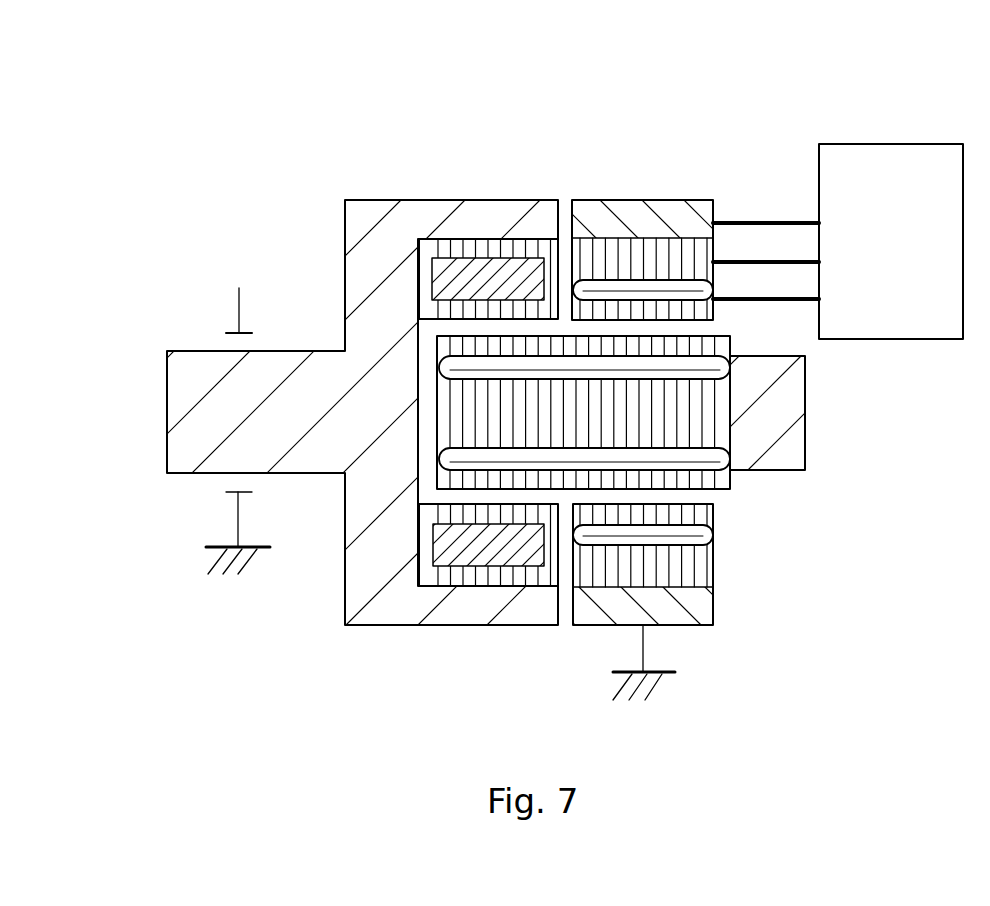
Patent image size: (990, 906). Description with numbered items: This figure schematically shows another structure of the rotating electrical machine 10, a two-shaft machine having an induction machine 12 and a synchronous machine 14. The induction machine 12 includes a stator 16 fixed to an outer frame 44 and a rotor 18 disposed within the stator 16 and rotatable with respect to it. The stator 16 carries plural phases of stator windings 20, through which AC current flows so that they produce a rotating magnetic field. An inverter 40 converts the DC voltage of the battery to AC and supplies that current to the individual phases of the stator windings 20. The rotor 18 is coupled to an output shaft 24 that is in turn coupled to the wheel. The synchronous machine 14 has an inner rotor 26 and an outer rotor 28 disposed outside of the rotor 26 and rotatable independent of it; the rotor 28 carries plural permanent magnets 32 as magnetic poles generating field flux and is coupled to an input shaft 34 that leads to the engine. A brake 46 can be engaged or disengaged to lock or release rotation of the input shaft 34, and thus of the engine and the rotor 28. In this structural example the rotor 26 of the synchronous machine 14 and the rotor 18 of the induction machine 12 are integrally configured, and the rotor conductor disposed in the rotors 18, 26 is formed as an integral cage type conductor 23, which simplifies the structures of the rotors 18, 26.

The rotating electrical machine 10 is at (343, 130).
The induction machine 12 is at (713, 173).
The synchronous machine 14 is at (558, 173).
The stator 16 is at (698, 567).
The rotor 18 is at (680, 398).
The stator windings 20 is at (708, 537).
The cage type conductor 23 is at (703, 458).
The output shaft 24 is at (793, 440).
The rotor 26 is at (463, 403).
The rotor 28 is at (547, 577).
The permanent magnets 32 is at (482, 558).
The input shaft 34 is at (307, 467).
The inverter 40 is at (895, 143).
The outer frame 44 is at (668, 663).
The brake 46 is at (231, 495).